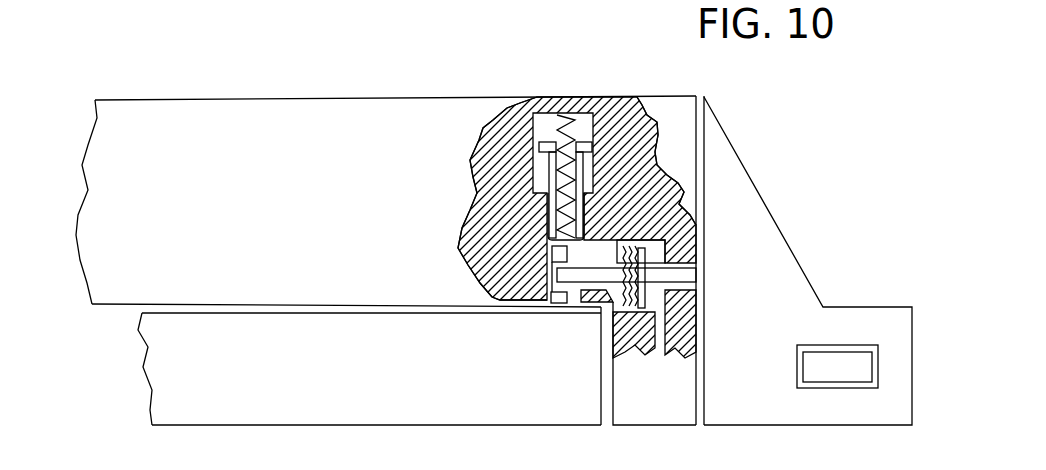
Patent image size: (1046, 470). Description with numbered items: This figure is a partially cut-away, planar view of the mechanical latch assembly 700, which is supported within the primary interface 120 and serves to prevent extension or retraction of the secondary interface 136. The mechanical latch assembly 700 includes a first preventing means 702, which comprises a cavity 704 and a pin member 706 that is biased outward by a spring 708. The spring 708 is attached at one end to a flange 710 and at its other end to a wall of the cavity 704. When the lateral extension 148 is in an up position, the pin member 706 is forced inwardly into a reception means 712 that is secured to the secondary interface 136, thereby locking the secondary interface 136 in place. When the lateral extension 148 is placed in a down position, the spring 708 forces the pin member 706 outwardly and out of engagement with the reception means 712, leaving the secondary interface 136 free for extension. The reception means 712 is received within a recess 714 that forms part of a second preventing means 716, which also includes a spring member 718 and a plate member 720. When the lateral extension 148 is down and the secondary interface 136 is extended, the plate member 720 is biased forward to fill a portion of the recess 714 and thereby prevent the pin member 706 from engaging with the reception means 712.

The primary interface 120 is at (250, 148).
The secondary interface 136 is at (178, 403).
The lateral extension 148 is at (786, 320).
The mechanical latch assembly 700 is at (706, 125).
The first preventing means 702 is at (680, 256).
The cavity 704 is at (645, 327).
The pin member 706 is at (690, 278).
The spring 708 is at (653, 310).
The flange 710 is at (703, 200).
The reception means 712 is at (560, 300).
The recess 714 is at (615, 192).
The second preventing means 716 is at (532, 168).
The spring member 718 is at (578, 142).
The plate member 720 is at (546, 142).